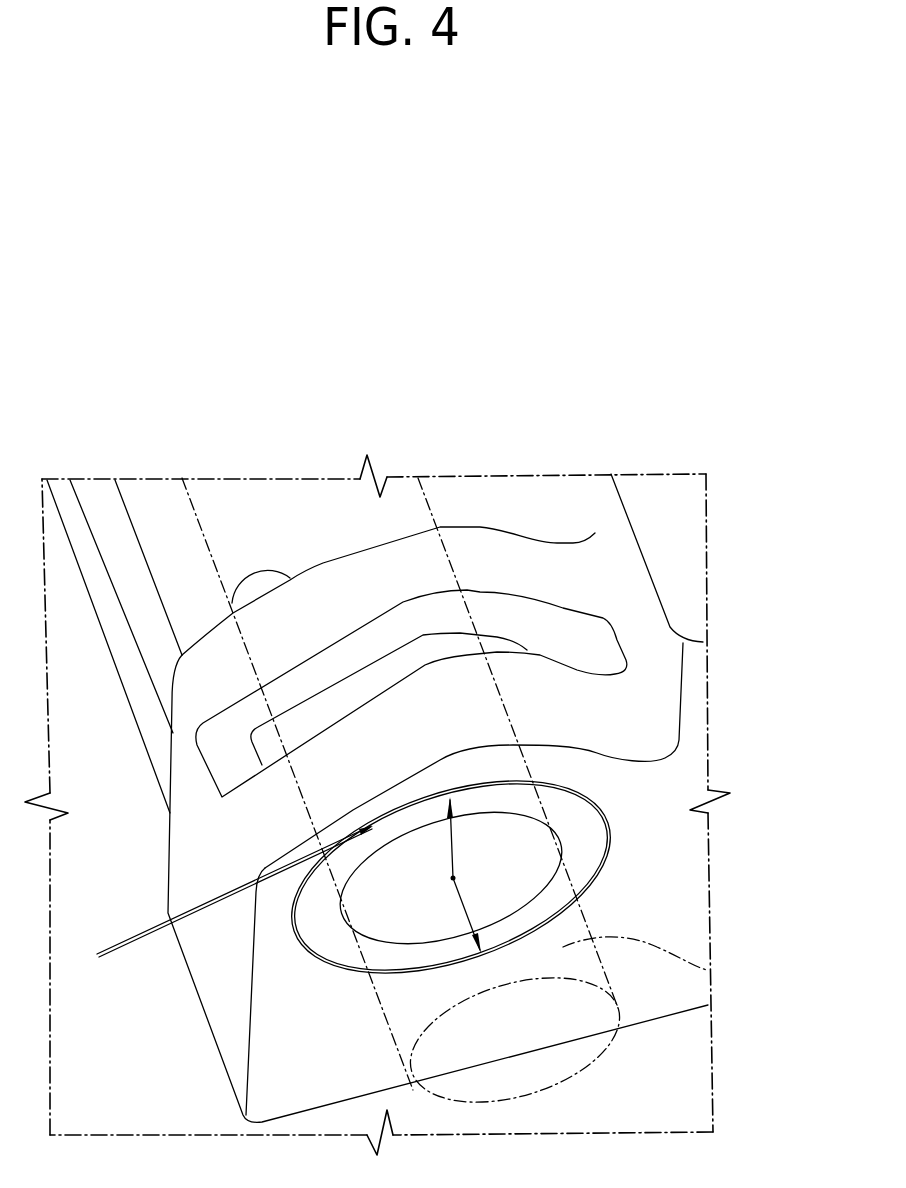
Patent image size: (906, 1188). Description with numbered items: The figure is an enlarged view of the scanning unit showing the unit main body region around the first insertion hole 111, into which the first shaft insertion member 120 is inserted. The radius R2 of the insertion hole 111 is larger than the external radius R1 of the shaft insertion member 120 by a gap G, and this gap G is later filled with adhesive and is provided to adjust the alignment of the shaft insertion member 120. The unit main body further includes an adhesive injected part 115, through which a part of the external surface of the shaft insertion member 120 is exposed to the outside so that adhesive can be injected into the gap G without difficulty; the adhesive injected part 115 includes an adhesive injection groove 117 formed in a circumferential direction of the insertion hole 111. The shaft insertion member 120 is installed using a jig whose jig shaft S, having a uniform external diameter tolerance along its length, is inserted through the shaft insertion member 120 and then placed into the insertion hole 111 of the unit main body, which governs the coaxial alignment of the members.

The first insertion hole 111 is at (607, 813).
The adhesive injected part 115 is at (533, 612).
The adhesive injection groove 117 is at (323, 704).
The first shaft insertion member 120 is at (583, 855).
The jig shaft S is at (707, 970).
The gap G is at (92, 918).
The external radius R1 is at (468, 839).
The radius R2 is at (480, 915).